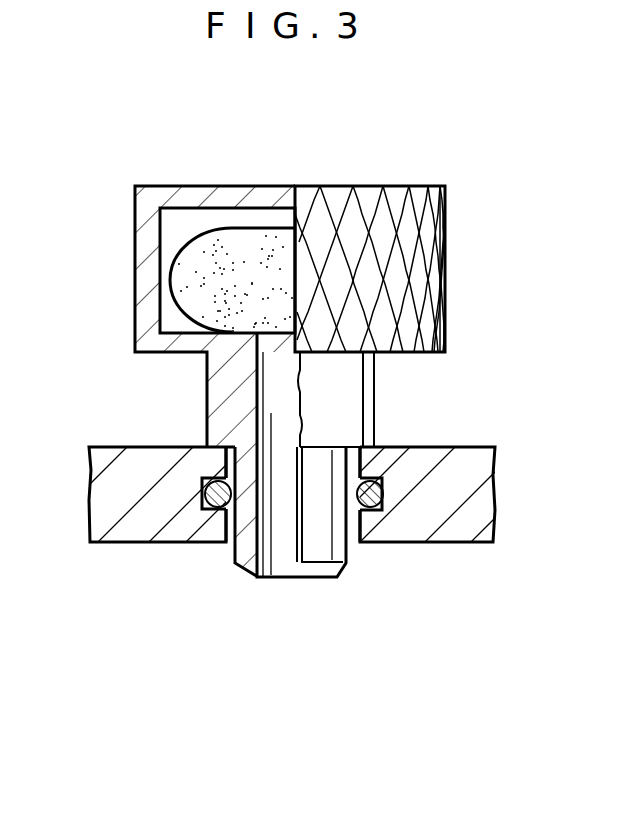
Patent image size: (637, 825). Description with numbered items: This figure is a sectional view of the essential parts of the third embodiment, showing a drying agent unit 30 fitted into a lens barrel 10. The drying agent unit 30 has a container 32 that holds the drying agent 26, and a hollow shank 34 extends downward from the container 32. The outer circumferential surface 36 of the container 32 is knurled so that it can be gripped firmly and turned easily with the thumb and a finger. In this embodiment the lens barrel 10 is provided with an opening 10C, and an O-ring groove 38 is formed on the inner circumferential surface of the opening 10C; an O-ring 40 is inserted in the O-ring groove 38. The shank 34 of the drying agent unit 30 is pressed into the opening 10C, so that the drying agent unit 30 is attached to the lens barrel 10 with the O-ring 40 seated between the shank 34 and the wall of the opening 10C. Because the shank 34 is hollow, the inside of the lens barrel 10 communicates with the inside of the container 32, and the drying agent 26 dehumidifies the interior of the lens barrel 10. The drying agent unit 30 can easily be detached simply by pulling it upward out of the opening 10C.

The lens barrel 10 is at (100, 457).
The opening 10C is at (233, 540).
The drying agent 26 is at (232, 235).
The drying agent unit 30 is at (402, 182).
The container 32 is at (142, 314).
The hollow shank 34 is at (215, 420).
The outer circumferential surface 36 is at (441, 283).
The O-ring groove 38 is at (377, 478).
The O-ring 40 is at (383, 503).